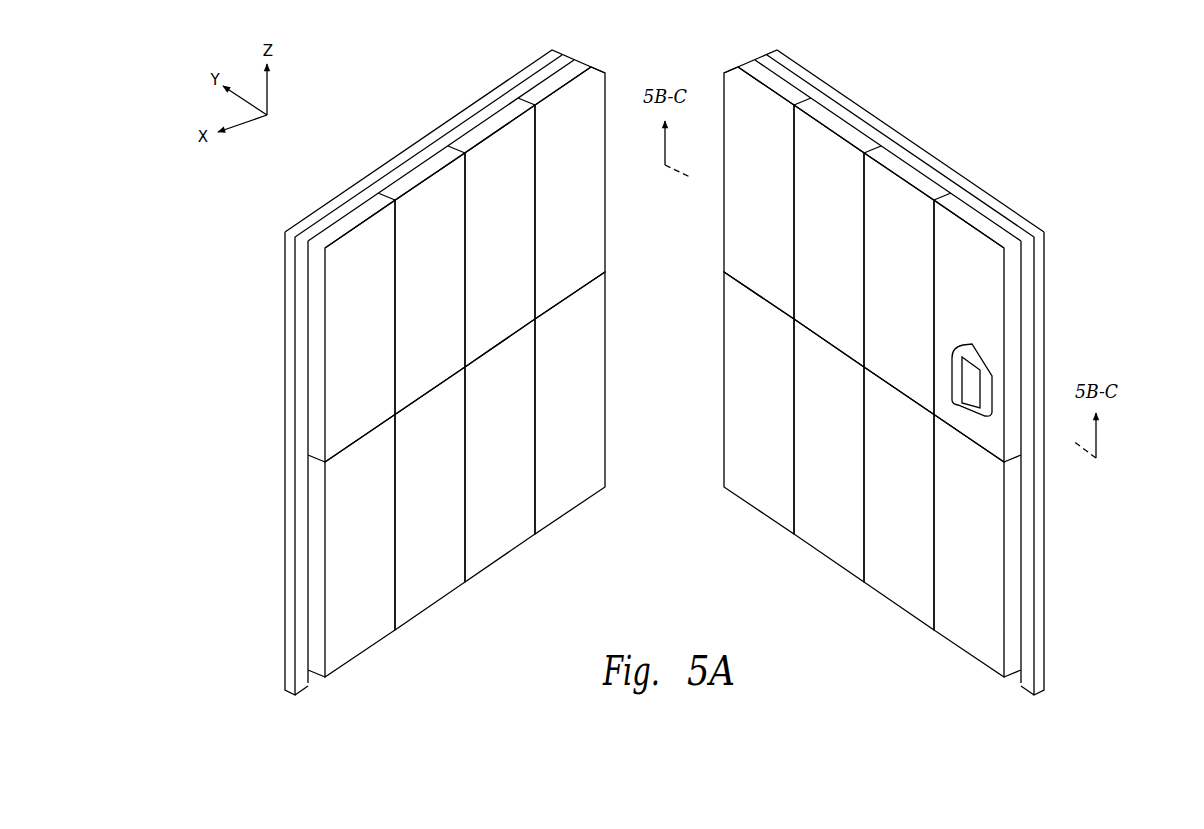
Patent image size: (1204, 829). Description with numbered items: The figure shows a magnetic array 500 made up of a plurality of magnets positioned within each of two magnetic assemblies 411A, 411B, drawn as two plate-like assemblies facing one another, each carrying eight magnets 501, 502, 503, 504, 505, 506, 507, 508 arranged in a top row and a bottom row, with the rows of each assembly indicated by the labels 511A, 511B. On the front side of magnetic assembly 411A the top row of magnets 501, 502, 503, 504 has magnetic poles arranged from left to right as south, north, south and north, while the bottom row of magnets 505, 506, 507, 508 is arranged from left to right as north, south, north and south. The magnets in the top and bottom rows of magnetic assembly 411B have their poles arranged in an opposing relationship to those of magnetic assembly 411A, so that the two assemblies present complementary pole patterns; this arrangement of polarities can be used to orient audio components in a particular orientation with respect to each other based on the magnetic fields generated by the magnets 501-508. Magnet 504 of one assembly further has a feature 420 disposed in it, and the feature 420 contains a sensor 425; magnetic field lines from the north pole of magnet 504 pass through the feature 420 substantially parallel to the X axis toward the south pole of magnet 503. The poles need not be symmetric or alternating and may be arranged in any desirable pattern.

The magnetic array 500 is at (953, 83).
The first magnet array 511A is at (292, 203).
The second magnet array 511B is at (1033, 202).
The magnetic assembly 411A is at (258, 573).
The magnetic assembly 411B is at (1073, 574).
The magnet 501 is at (587, 140).
The magnet 502 is at (518, 184).
The magnet 503 is at (448, 234).
The magnet 504 is at (377, 282).
The magnet 505 is at (588, 462).
The magnet 506 is at (520, 512).
The magnet 507 is at (450, 560).
The magnet 508 is at (380, 608).
The feature 420 is at (953, 354).
The sensor 425 is at (970, 382).